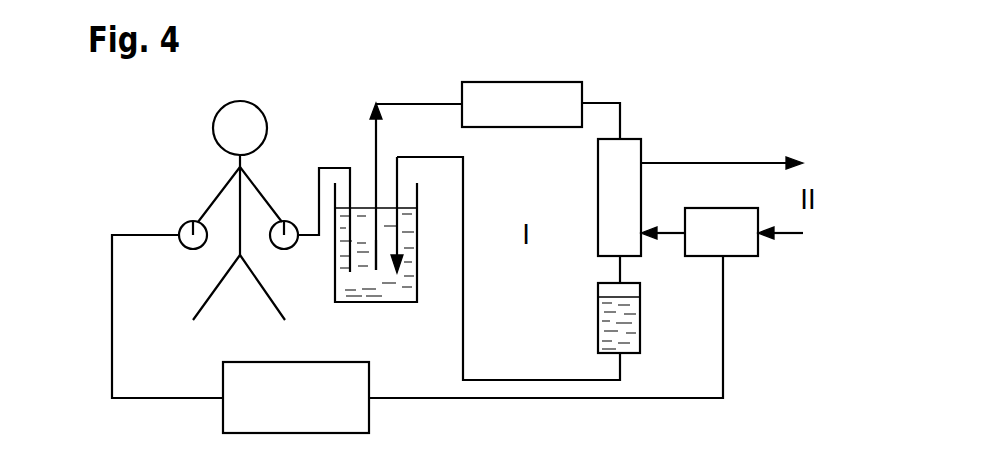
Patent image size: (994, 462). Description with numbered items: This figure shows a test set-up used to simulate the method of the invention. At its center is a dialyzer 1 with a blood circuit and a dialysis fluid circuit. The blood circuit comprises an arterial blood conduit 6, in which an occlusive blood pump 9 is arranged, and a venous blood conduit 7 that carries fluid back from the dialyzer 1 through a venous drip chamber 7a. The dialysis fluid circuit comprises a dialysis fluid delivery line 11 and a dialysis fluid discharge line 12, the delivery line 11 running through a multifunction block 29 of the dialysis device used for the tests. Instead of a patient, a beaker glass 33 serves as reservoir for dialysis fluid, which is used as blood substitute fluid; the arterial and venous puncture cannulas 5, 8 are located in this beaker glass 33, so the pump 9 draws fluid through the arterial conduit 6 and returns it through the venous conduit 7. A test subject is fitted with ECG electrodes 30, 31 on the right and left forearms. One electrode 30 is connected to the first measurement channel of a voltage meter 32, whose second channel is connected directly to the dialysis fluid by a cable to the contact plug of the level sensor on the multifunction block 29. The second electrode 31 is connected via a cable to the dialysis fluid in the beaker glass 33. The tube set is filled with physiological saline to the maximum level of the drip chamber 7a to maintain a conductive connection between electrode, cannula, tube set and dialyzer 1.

The dialyzer 1 is at (632, 137).
The arterial puncture cannula 5 is at (373, 270).
The arterial blood conduit 6 is at (416, 98).
The venous blood conduit 7 is at (500, 378).
The venous drip chamber 7a is at (633, 292).
The venous puncture cannula 8 is at (400, 264).
The occlusive blood pump 9 is at (514, 92).
The dialysis fluid delivery line 11 is at (792, 236).
The dialysis fluid discharge line 12 is at (715, 161).
The multifunction block (MFB) 29 is at (738, 252).
The ECG electrode 30 is at (196, 222).
The ECG electrode 31 is at (287, 222).
The voltage meter 32 is at (238, 378).
The beaker glass 33 is at (390, 290).